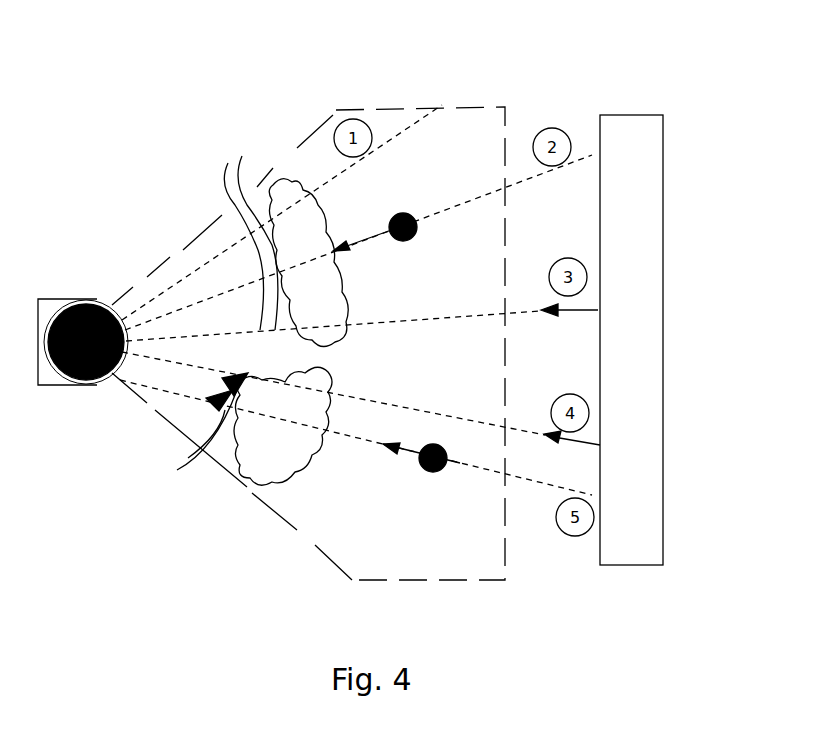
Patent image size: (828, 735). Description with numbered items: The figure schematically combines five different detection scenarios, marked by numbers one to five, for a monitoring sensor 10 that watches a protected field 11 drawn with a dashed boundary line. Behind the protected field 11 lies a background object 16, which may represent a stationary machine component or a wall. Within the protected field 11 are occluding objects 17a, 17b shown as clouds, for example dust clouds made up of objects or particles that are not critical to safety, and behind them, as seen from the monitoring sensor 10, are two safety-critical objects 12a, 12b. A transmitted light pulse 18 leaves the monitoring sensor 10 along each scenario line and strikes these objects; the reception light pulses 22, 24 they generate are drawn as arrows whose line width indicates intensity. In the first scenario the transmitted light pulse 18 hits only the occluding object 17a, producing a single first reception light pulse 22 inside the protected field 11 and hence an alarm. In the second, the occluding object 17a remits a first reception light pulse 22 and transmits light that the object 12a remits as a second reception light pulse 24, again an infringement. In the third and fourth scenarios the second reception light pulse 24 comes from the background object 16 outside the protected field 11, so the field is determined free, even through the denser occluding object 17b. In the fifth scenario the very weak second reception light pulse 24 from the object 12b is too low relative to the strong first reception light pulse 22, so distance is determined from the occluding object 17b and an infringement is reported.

The monitoring sensor 10 is at (63, 305).
The protected field 11 is at (440, 580).
The safety-critical object 12a is at (405, 213).
The safety-critical object 12b is at (431, 473).
The background object 16 is at (642, 333).
The occluding object 17a is at (296, 183).
The occluding object 17b is at (263, 475).
The transmitted light pulse 18 is at (418, 125).
The first reception light pulse 22 is at (278, 233).
The second reception light pulse 24 is at (365, 242).